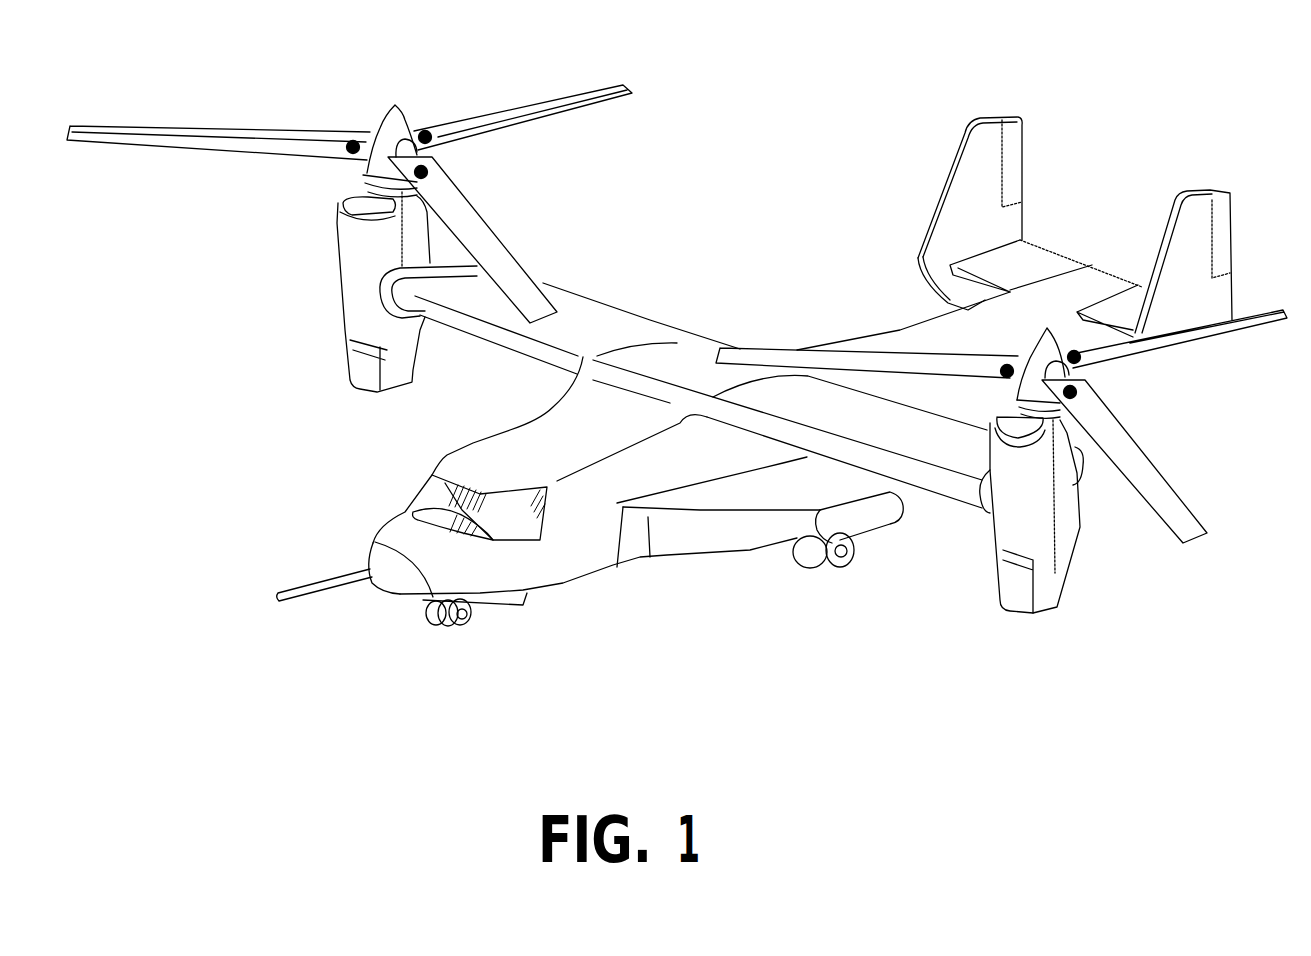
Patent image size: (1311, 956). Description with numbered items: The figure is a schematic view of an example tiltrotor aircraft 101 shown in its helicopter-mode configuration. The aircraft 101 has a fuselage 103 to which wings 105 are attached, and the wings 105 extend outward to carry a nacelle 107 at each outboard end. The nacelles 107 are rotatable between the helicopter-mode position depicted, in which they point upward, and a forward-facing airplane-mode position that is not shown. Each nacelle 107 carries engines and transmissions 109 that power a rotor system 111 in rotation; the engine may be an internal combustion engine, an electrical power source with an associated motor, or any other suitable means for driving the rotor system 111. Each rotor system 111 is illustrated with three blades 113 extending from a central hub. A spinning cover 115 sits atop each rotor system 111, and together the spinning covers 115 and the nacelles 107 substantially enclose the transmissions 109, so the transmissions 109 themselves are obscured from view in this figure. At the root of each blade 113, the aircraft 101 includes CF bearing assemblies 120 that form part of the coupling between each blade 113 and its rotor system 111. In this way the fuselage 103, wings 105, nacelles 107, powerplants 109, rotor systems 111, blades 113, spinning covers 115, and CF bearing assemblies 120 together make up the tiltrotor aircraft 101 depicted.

The tiltrotor aircraft 101 is at (901, 99).
The fuselage 103 is at (661, 558).
The wings 105 is at (614, 320).
The nacelles 107 is at (340, 276).
The engines and transmissions 109 is at (338, 181).
The rotor systems 111 is at (381, 88).
The blades 113 is at (214, 137).
The spinning covers 115 is at (385, 127).
The CF bearing assemblies 120 is at (347, 145).